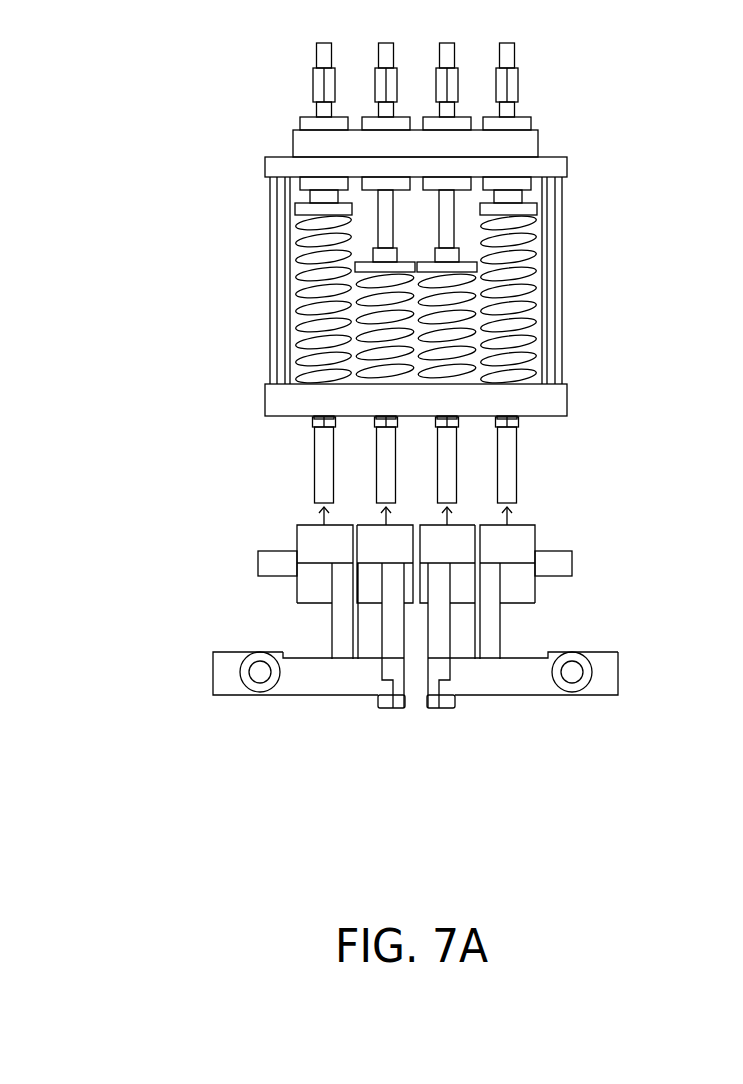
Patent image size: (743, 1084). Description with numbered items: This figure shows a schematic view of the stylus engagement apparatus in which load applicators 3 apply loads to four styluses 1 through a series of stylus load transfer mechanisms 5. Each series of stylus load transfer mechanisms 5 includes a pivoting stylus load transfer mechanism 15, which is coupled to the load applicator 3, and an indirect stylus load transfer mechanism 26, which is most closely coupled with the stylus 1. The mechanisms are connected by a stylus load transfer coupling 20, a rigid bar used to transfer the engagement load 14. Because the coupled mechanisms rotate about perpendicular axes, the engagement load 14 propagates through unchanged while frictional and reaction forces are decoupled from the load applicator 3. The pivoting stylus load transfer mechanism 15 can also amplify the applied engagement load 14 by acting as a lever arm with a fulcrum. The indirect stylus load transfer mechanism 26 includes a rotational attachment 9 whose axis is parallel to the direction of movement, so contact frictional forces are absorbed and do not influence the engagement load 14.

The stylus 1 is at (385, 708).
The load applicator 3 is at (565, 45).
The series of stylus load transfer mechanisms 5 is at (386, 643).
The rotational attachment 9 is at (417, 621).
The engagement load 14 is at (517, 511).
The pivoting stylus load transfer mechanism 15 is at (373, 543).
The stylus load transfer coupling 20 is at (388, 643).
The indirect stylus load transfer mechanism 26 is at (253, 693).